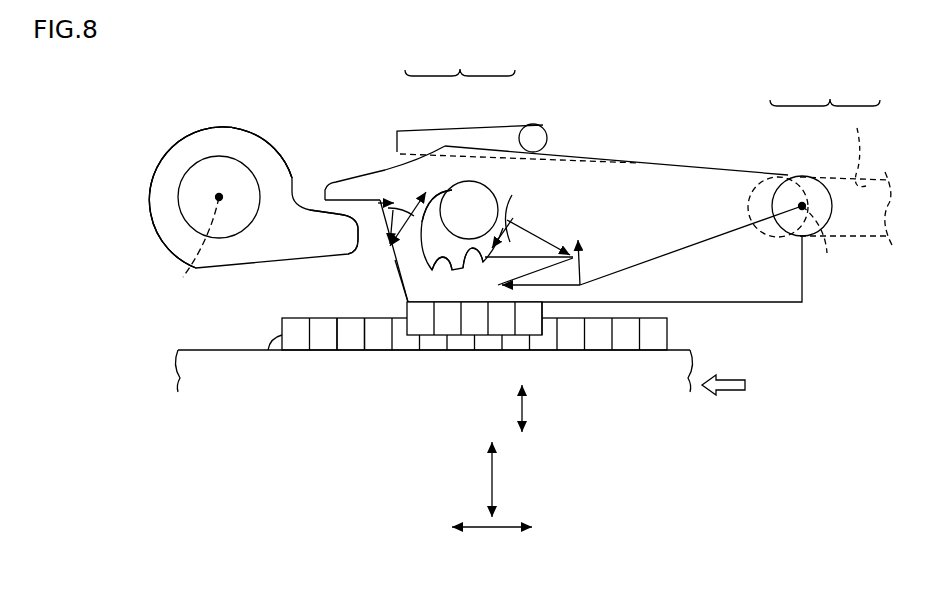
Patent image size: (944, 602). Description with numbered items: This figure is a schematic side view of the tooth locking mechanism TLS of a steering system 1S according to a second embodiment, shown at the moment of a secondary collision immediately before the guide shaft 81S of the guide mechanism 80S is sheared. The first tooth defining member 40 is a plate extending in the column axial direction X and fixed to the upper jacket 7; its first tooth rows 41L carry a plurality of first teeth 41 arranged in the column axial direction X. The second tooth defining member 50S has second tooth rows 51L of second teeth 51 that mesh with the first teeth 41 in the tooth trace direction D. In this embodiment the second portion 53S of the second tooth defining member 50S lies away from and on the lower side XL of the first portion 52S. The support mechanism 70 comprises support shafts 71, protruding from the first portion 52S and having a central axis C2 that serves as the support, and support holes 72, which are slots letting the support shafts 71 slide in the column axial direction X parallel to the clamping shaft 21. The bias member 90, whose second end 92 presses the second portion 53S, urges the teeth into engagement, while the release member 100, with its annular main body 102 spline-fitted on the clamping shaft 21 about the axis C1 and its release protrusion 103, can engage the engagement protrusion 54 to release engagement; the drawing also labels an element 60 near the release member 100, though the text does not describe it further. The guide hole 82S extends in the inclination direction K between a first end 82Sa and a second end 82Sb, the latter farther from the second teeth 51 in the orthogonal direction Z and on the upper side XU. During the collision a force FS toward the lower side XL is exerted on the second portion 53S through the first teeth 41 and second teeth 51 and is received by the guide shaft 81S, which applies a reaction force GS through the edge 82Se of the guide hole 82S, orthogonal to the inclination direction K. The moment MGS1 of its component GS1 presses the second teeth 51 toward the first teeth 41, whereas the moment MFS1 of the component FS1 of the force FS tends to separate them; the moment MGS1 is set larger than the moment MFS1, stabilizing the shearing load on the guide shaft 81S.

The release member 100 is at (206, 122).
The main body 102 is at (167, 160).
The drive unit 60 is at (246, 103).
The clamping shaft 21 is at (238, 158).
The cam rotation center C1 is at (191, 252).
The release protrusion 103 is at (340, 258).
The engagement protrusion 54 is at (333, 183).
The inclination direction K is at (382, 240).
The second portion 53S is at (402, 290).
The second tooth defining member 50S is at (715, 162).
The tooth locking mechanism TLS is at (665, 128).
The steering system 1S is at (633, 94).
The bias member 90 is at (526, 122).
The second end 92 is at (547, 137).
The guide mechanism 80S is at (460, 56).
The guide shaft 81S is at (477, 205).
The guide hole 82S is at (458, 248).
The second end 82Sb is at (450, 198).
The first end 82Sa is at (437, 272).
The edge 82Se is at (472, 262).
The component of the reaction force GS1 is at (529, 208).
The moment MGS1 is at (547, 220).
The reaction force GS is at (560, 220).
The moment MFS1 is at (592, 252).
The component of the force FS1 is at (590, 268).
The force FS is at (572, 290).
The support mechanism 70 is at (825, 81).
The support shafts 71 is at (764, 178).
The support holes 72 is at (875, 127).
The central axis C2 is at (713, 245).
The first portion 52S is at (785, 303).
The upper jacket 7 is at (222, 347).
The first tooth defining member 40 is at (670, 336).
The first teeth 41 is at (377, 342).
The first tooth rows 41L is at (268, 358).
The second teeth 51 is at (498, 336).
The second tooth rows 51L is at (548, 331).
The tooth trace direction D is at (524, 417).
The orthogonal direction Z is at (494, 485).
The column axial direction X is at (492, 530).
The lower side XL is at (425, 526).
The upper side XU is at (557, 526).